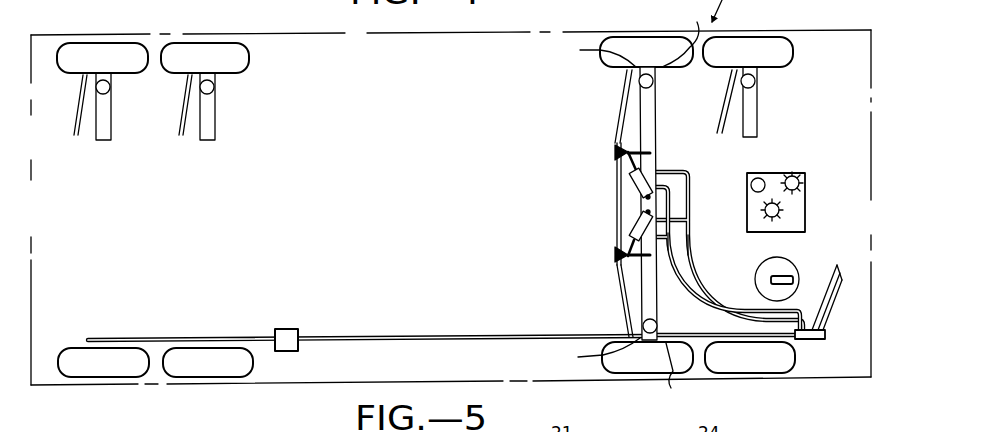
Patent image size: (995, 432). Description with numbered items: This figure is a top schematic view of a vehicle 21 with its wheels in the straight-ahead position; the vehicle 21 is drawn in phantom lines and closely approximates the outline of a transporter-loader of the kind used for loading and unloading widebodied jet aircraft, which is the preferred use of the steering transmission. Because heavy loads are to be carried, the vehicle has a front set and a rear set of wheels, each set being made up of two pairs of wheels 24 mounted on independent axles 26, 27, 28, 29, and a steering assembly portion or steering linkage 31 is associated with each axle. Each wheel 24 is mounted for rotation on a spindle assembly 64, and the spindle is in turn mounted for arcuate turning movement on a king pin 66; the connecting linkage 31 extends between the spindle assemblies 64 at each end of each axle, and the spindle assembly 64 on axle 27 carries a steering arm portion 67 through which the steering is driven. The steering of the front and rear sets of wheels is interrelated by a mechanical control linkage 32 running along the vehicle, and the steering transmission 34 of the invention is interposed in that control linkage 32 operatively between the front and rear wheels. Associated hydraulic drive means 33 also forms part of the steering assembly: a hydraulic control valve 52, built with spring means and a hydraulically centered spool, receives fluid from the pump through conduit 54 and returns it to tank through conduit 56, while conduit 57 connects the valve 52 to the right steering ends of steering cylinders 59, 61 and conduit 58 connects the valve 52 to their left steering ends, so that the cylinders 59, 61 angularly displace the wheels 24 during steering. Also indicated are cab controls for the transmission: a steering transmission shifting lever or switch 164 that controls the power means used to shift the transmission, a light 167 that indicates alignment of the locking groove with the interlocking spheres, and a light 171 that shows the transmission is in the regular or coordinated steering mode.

The vehicle 21 is at (572, 28).
The wheels 24 is at (776, 392).
The axle 26 is at (758, 118).
The axle 27 is at (656, 115).
The axle 28 is at (216, 114).
The axle 29 is at (112, 112).
The steering linkage 31 is at (175, 150).
The control linkage 32 is at (437, 329).
The hydraulic drive means 33 is at (714, 262).
The steering transmission 34 is at (289, 326).
The hydraulic control valve 52 is at (817, 340).
The conduit 54 is at (838, 297).
The conduit 56 is at (840, 272).
The conduit 57 is at (704, 314).
The conduit 58 is at (694, 240).
The steering cylinder 59 is at (628, 226).
The steering cylinder 61 is at (628, 191).
The spindle assembly 64 is at (680, 207).
The king pin 66 is at (741, 81).
The steering arm portion 67 is at (597, 205).
The steering transmission shifting lever or switch 164 is at (788, 274).
The light 167 is at (782, 211).
The light 171 is at (806, 175).